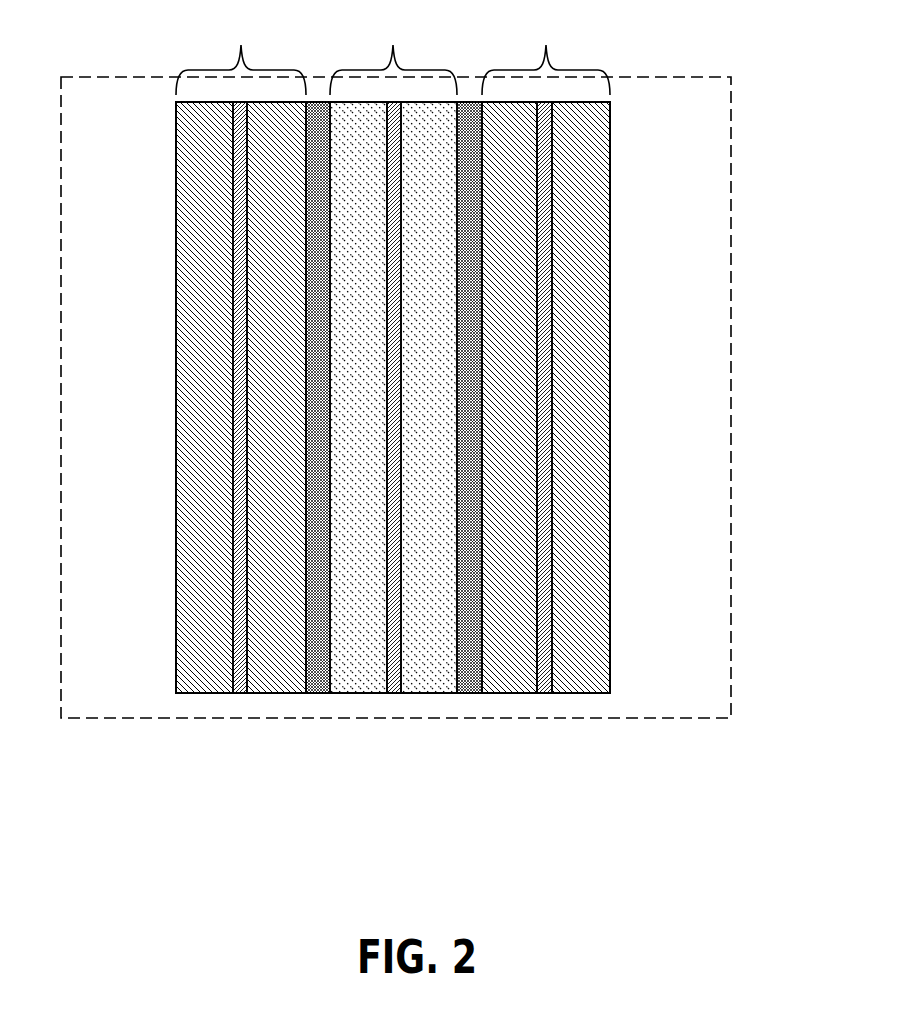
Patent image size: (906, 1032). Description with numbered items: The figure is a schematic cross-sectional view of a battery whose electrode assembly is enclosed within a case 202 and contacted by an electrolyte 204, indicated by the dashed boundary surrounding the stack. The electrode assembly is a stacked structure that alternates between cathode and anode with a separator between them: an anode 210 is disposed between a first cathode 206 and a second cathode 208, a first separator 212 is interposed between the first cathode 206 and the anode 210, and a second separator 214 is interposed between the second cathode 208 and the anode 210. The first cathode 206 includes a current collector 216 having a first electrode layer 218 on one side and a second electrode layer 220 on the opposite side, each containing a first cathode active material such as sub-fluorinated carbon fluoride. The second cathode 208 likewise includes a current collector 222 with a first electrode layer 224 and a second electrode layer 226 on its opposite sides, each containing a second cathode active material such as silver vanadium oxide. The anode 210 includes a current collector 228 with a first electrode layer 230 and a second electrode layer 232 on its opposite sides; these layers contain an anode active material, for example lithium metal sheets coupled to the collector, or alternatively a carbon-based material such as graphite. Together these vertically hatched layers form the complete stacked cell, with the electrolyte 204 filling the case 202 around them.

The case 202 is at (731, 110).
The electrolyte 204 is at (682, 695).
The first cathode 206 is at (241, 55).
The second cathode 208 is at (546, 55).
The anode 210 is at (393, 55).
The first separator 212 is at (315, 696).
The second separator 214 is at (463, 696).
The current collector 216 is at (242, 696).
The first electrode layer 218 is at (203, 696).
The second electrode layer 220 is at (280, 696).
The current collector 222 is at (547, 696).
The first electrode layer 224 is at (506, 696).
The second electrode layer 226 is at (582, 696).
The current collector 228 is at (392, 696).
The first electrode layer 230 is at (355, 696).
The second electrode layer 232 is at (430, 696).